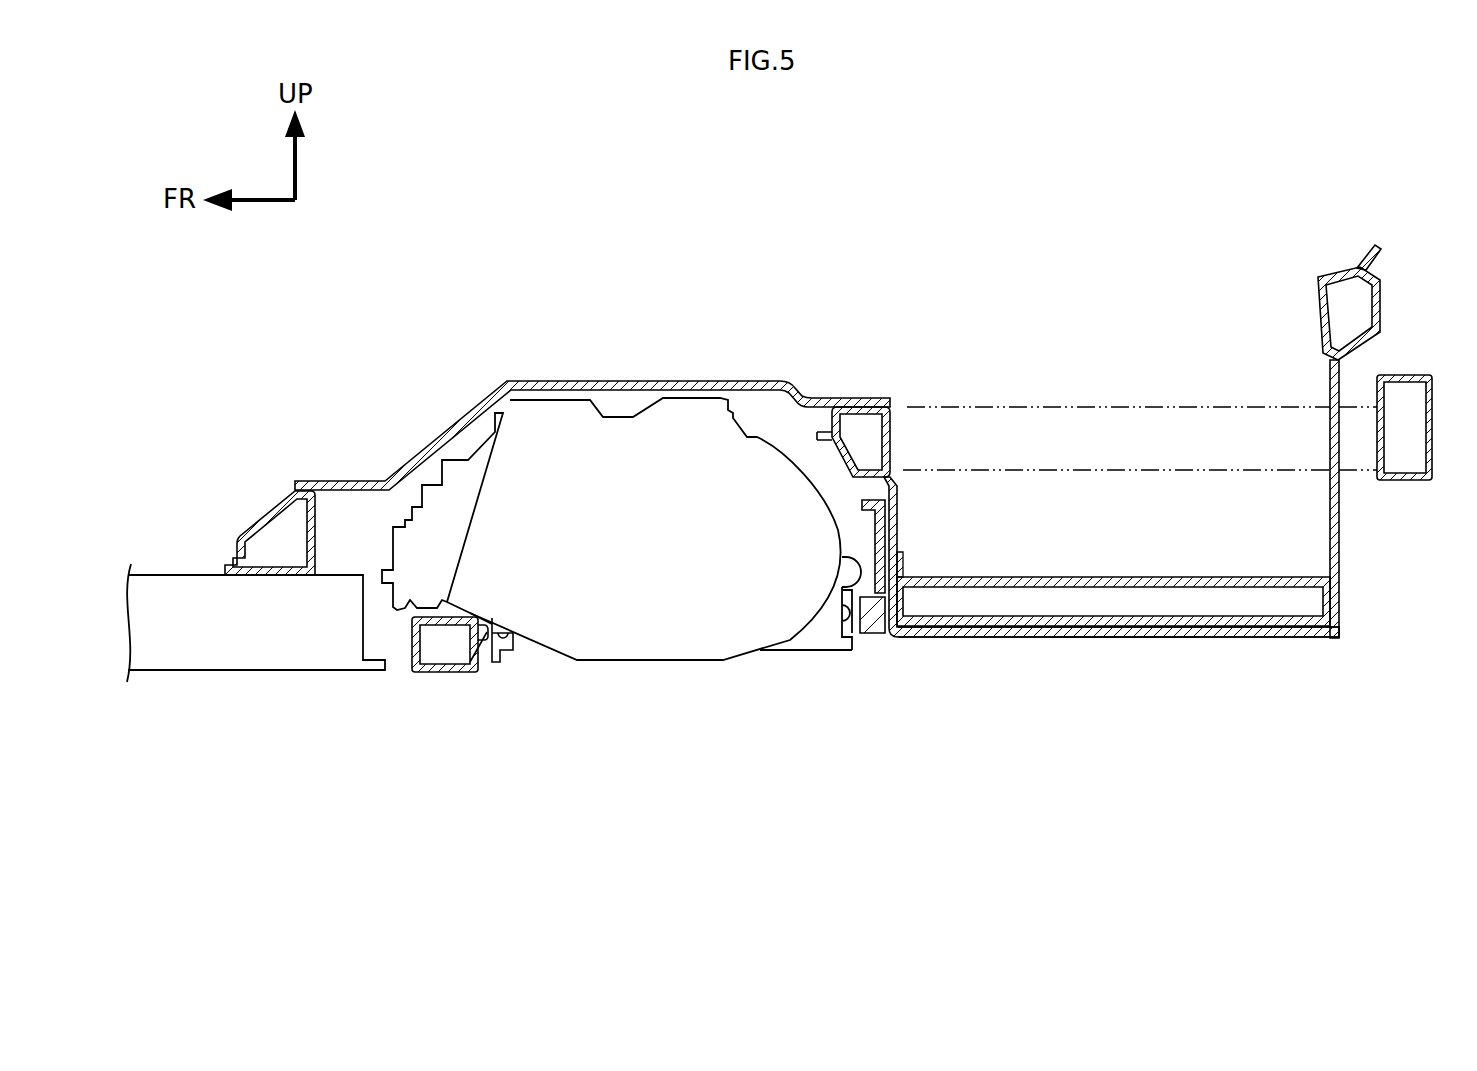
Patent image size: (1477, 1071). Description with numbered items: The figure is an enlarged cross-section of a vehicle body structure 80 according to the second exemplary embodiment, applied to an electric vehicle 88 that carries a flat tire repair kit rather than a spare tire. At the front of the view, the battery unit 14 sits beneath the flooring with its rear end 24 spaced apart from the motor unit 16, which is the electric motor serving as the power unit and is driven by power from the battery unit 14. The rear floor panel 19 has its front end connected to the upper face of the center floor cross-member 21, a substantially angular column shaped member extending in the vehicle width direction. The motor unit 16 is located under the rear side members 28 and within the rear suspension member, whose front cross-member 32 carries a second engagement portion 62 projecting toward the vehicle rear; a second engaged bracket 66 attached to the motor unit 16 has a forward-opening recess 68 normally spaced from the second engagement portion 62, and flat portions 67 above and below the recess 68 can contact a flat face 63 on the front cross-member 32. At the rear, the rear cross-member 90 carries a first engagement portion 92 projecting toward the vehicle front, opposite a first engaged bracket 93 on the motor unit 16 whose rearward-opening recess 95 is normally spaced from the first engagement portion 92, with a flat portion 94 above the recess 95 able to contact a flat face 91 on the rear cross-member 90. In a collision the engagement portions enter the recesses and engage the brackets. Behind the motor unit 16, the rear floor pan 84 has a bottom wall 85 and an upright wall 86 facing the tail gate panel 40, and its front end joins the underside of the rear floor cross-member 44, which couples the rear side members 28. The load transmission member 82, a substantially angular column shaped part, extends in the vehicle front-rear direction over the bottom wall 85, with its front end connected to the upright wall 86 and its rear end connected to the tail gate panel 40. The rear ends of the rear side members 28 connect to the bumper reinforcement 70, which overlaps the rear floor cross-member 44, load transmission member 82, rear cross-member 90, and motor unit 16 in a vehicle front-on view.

The battery unit 14 is at (213, 657).
The motor unit 16 is at (621, 583).
The rear floor panel 19 is at (627, 385).
The center floor cross-member 21 is at (258, 513).
The rear end 24 is at (352, 652).
The rear side member 28 is at (1140, 405).
The front cross-member 32 is at (452, 710).
The tail gate panel 40 is at (1340, 525).
The rear floor cross-member 44 is at (863, 398).
The second engagement portion 62 is at (483, 650).
The flat face 63 is at (460, 670).
The second engaged bracket 66 is at (540, 653).
The flat portion 67 is at (483, 625).
The recess 68 is at (503, 637).
The bumper reinforcement 70 is at (1413, 375).
The vehicle body structure 80 is at (592, 349).
The load transmission member 82 is at (1063, 577).
The rear floor pan 84 is at (1118, 675).
The bottom wall 85 is at (1105, 642).
The upright wall 86 is at (898, 520).
The vehicle 88 is at (1051, 433).
The rear cross-member 90 is at (867, 635).
The flat face 91 is at (873, 555).
The first engagement portion 92 is at (867, 635).
The first engaged bracket 93 is at (806, 645).
The flat portion 94 is at (840, 560).
The recess 95 is at (843, 622).